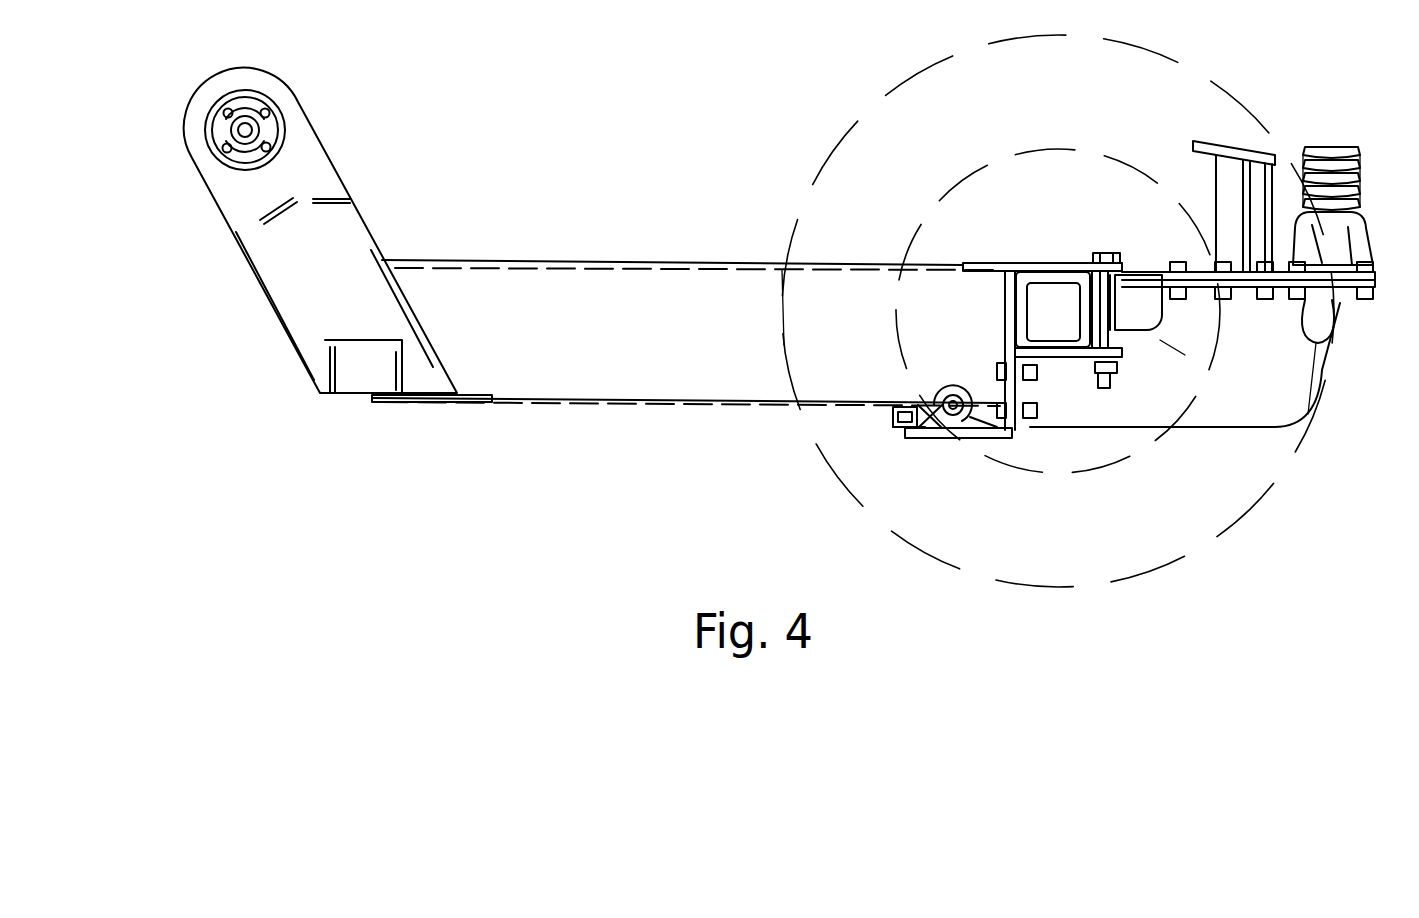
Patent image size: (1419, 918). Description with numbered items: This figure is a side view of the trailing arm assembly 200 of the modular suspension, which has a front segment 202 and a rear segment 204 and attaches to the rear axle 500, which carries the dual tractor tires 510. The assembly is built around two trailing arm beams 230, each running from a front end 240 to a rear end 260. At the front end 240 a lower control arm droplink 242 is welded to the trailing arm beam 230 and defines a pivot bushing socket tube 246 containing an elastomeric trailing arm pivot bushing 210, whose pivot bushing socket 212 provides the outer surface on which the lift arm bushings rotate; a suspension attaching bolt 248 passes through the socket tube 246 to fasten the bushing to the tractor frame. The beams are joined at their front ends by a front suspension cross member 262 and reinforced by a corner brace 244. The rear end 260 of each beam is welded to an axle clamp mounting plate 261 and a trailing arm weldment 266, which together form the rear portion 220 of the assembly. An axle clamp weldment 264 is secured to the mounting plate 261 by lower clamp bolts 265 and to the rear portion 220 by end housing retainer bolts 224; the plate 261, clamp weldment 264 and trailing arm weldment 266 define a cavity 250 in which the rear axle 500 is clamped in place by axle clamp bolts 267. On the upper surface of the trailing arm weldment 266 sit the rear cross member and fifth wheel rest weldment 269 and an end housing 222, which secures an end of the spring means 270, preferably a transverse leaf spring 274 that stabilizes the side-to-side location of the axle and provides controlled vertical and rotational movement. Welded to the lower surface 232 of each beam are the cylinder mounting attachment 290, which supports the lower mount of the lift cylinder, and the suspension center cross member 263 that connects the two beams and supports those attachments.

The trailing arm assembly 200 is at (592, 318).
The front segment 202 is at (313, 278).
The rear segment 204 is at (1152, 273).
The elastomeric trailing arm pivot bushing 210 is at (272, 132).
The pivot bushing socket 212 is at (213, 150).
The rear portion 220 is at (1341, 305).
The end housing 222 is at (1353, 240).
The end housing retainer bolts 224 is at (1178, 299).
The trailing arm beam 230 is at (628, 292).
The lower surface 232 is at (662, 402).
The front end 240 is at (437, 308).
The lower control arm droplink 242 is at (330, 223).
The corner brace 244 is at (425, 397).
The pivot bushing socket tube 246 is at (190, 153).
The suspension attaching bolt 248 is at (250, 131).
The cavity 250 is at (1057, 310).
The rear end 260 is at (978, 337).
The axle clamp mounting plate 261 is at (1010, 313).
The front suspension cross member 262 is at (347, 393).
The suspension center cross member 263 is at (890, 426).
The axle clamp weldment 264 is at (1185, 355).
The lower clamp bolts 265 is at (1035, 373).
The trailing arm weldment 266 is at (1153, 278).
The axle clamp bolts 267 is at (1107, 300).
The rear cross member and fifth wheel rest weldment 269 is at (1233, 150).
The spring means 270 is at (1325, 152).
The transverse leaf spring 274 is at (1331, 158).
The cylinder mounting attachment 290 is at (936, 420).
The rear axle 500 is at (1040, 292).
The dual tractor tires 510 is at (828, 218).